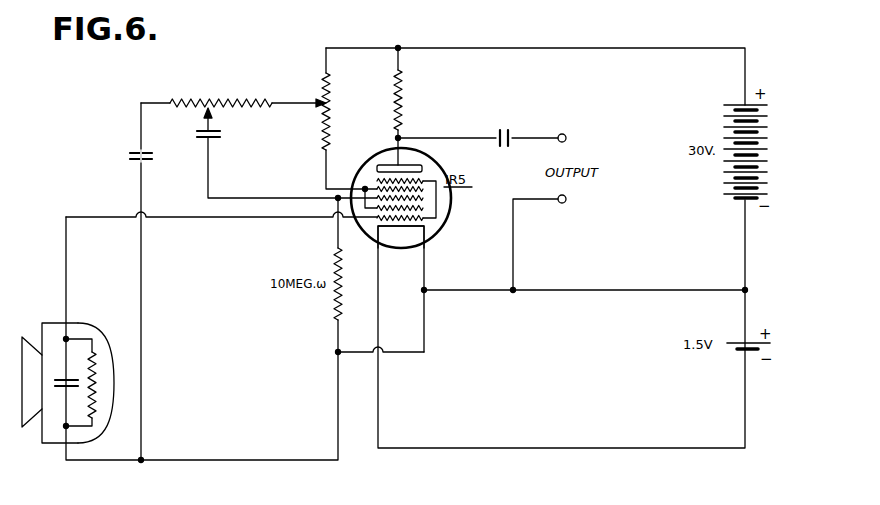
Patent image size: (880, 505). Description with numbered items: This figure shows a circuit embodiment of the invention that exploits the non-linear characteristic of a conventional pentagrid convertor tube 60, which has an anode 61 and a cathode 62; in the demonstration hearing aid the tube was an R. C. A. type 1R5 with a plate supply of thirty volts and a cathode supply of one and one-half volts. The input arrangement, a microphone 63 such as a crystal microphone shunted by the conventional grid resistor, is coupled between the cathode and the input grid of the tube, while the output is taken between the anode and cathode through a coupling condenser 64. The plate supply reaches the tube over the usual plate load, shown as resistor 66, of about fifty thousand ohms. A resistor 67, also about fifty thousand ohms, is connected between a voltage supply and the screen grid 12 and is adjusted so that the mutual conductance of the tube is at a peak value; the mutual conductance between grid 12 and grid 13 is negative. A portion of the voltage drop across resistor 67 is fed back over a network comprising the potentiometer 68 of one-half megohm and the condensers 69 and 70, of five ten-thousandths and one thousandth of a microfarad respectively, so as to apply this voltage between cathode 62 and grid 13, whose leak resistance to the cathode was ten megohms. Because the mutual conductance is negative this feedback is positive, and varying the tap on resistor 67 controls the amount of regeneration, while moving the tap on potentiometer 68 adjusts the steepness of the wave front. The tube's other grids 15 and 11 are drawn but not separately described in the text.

The tube 60 is at (444, 214).
The anode 61 is at (414, 167).
The cathode 62 is at (397, 231).
The microphone 63 is at (55, 436).
The coupling condenser 64 is at (510, 147).
The resistor 66 is at (409, 109).
The resistor 67 is at (337, 122).
The potentiometer 68 is at (185, 99).
The condenser 69 is at (145, 163).
The condenser 70 is at (213, 144).
The grid 15 is at (407, 177).
The grid 13 is at (407, 198).
The screen grid 12 is at (407, 208).
The grid 11 is at (407, 218).